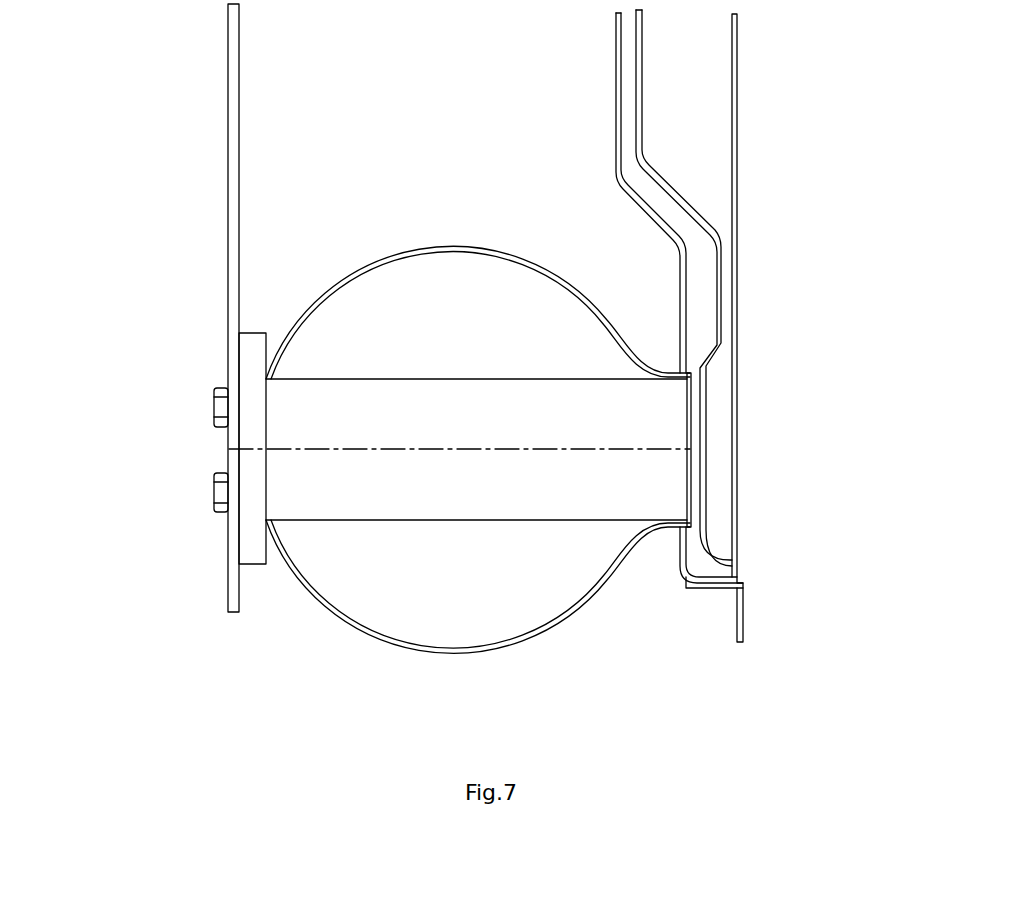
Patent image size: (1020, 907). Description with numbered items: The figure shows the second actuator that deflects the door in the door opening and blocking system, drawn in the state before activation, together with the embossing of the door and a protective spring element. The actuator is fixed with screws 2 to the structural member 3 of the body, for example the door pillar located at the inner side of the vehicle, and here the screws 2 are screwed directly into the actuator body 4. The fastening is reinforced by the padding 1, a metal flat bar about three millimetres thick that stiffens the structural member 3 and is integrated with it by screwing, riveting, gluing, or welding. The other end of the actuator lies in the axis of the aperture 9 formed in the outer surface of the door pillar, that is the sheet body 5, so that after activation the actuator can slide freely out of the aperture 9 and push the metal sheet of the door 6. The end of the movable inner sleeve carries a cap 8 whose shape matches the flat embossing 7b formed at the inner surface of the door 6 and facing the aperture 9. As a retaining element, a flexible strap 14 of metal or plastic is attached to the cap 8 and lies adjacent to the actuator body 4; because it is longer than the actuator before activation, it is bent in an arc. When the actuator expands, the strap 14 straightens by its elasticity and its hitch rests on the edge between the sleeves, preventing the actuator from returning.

The padding 1 is at (301, 365).
The screws 2 is at (137, 391).
The structural member 3 is at (142, 308).
The actuator body 4 is at (476, 343).
The sheet body 5 is at (589, 193).
The door 6 is at (822, 328).
The embossing 7b is at (780, 288).
The cap 8 is at (807, 417).
The aperture 9 is at (640, 602).
The flexible strap 14 is at (451, 458).